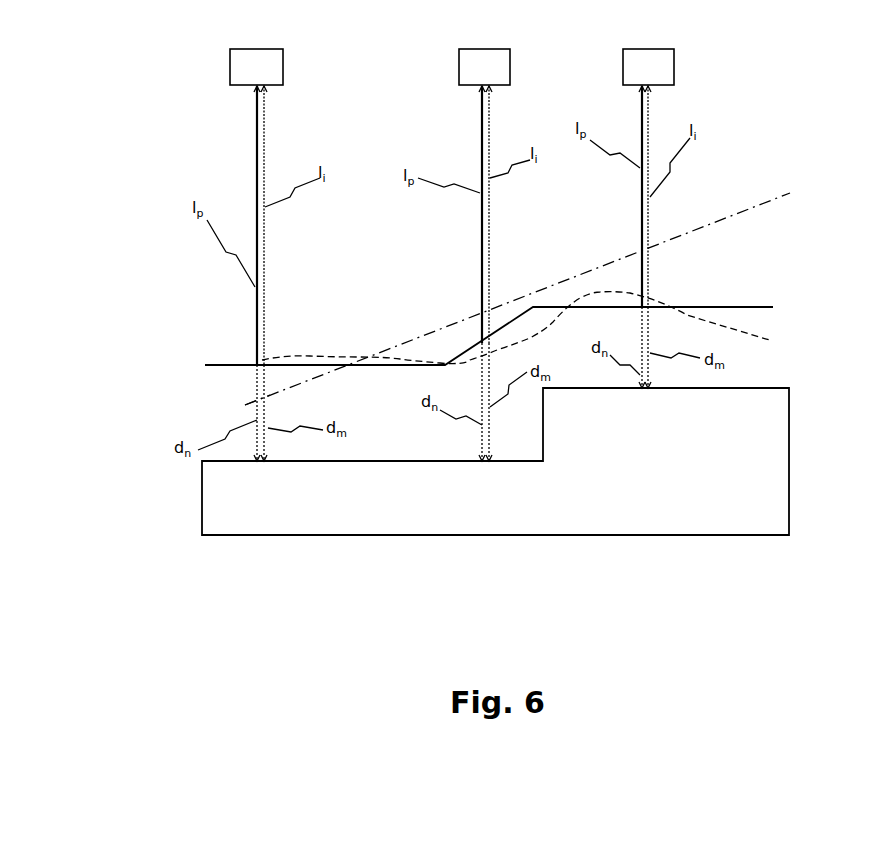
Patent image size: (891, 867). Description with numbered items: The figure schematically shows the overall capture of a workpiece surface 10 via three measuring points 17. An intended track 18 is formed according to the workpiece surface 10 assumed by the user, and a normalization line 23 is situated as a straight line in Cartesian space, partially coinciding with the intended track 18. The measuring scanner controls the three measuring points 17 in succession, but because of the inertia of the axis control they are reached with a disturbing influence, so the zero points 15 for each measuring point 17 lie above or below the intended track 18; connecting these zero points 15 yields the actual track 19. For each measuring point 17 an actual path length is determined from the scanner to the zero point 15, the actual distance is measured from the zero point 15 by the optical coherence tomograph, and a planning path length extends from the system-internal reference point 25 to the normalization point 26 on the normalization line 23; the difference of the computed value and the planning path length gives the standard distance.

The workpiece surface 10 is at (541, 427).
The zero point 15 is at (489, 278).
The measuring point 17 is at (516, 278).
The intended track 18 is at (169, 327).
The actual track 19 is at (205, 305).
The normalization line 23 is at (182, 426).
The system-internal reference point 25 is at (465, 255).
The normalization point 26 is at (447, 285).